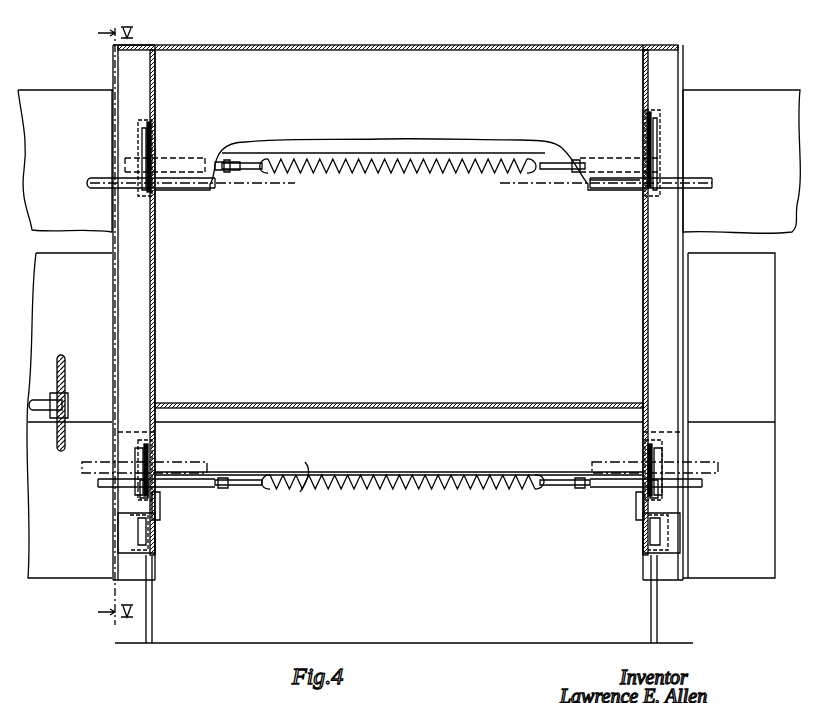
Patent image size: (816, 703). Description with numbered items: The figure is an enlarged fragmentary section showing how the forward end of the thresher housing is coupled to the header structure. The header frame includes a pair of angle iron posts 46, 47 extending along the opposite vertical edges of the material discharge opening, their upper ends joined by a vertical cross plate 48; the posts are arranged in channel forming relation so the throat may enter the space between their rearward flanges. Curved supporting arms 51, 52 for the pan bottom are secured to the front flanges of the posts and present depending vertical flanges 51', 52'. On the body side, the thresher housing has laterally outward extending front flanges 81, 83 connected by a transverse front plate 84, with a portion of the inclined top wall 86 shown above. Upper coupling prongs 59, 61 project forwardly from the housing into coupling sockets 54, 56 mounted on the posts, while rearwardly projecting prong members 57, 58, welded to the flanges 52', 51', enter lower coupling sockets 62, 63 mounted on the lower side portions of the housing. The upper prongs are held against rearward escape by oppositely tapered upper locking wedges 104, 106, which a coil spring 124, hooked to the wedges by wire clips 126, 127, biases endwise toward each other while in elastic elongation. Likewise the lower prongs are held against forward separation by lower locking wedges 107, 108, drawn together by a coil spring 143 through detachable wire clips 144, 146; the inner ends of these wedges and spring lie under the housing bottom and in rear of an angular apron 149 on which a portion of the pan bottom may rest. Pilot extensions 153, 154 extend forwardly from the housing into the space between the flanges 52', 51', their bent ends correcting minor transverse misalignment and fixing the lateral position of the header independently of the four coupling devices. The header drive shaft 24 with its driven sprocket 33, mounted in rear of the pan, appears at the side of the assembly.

The horizontal shaft 24 is at (40, 399).
The driven sprocket 33 is at (66, 372).
The angle iron post 46 is at (688, 252).
The angle iron post 47 is at (110, 238).
The vertical cross plate 48 is at (550, 156).
The curved supporting arm 51 is at (640, 533).
The vertical flange 51' is at (639, 599).
The curved supporting arm 52 is at (161, 533).
The vertical flange 52' is at (172, 599).
The coupling socket 54 is at (160, 130).
The coupling socket 56 is at (645, 130).
The coupling prong member 57 is at (140, 498).
The coupling prong member 58 is at (660, 498).
The upper coupling prong 59 is at (146, 120).
The upper coupling prong 61 is at (653, 115).
The lower coupling socket 62 is at (138, 448).
The lower coupling socket 63 is at (665, 452).
The front flange 81 is at (128, 322).
The front flange 83 is at (672, 334).
The front plate 84 is at (228, 170).
The top wall 86 is at (388, 45).
The upper locking wedge 104 is at (90, 178).
The upper locking wedge 106 is at (690, 177).
The lower locking wedge 107 is at (98, 483).
The lower locking wedge 108 is at (702, 483).
The coil spring 124 is at (400, 172).
The wire clip 126 is at (246, 160).
The wire clip 127 is at (558, 160).
The coil spring 143 is at (384, 486).
The wire clip 144 is at (234, 486).
The wire clip 146 is at (550, 486).
The angular apron 149 is at (302, 494).
The pilot extension 153 is at (160, 512).
The pilot extension 154 is at (644, 512).